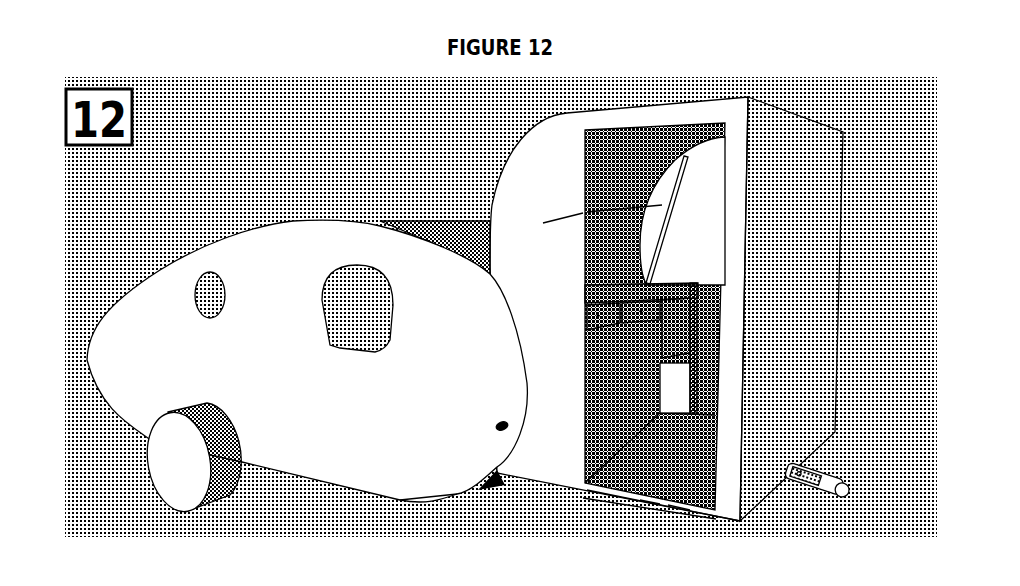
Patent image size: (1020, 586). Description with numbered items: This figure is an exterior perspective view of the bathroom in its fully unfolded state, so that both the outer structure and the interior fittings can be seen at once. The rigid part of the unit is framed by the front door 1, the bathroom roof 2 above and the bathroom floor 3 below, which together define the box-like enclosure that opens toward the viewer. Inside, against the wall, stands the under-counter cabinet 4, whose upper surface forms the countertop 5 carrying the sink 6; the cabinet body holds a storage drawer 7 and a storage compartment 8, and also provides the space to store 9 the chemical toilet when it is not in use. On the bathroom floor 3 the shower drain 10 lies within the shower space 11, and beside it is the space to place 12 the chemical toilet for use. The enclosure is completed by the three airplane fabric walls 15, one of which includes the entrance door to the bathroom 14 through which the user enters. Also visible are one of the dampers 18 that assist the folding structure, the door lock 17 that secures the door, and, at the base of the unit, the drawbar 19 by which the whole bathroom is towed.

The front door 1 is at (583, 147).
The bathroom roof 2 is at (685, 123).
The bathroom floor 3 is at (720, 500).
The under-counter cabinet 4 is at (662, 385).
The countertop 5 is at (670, 282).
The sink 6 is at (698, 294).
The storage drawer 7 is at (467, 490).
The storage compartment 8 is at (586, 355).
The space to store the chemical toilet 9 is at (586, 427).
The shower drain 10 is at (610, 495).
The shower space 11 is at (652, 497).
The space to place the chemical toilet 12 is at (677, 502).
The entrance door to the bathroom 14 is at (722, 390).
The airplane fabric walls 15 is at (652, 192).
The door lock 17 is at (497, 429).
The damper 18 is at (583, 190).
The drawbar 19 is at (823, 463).